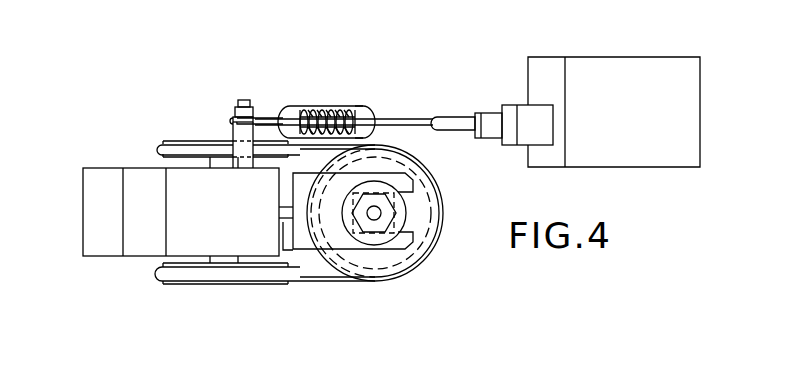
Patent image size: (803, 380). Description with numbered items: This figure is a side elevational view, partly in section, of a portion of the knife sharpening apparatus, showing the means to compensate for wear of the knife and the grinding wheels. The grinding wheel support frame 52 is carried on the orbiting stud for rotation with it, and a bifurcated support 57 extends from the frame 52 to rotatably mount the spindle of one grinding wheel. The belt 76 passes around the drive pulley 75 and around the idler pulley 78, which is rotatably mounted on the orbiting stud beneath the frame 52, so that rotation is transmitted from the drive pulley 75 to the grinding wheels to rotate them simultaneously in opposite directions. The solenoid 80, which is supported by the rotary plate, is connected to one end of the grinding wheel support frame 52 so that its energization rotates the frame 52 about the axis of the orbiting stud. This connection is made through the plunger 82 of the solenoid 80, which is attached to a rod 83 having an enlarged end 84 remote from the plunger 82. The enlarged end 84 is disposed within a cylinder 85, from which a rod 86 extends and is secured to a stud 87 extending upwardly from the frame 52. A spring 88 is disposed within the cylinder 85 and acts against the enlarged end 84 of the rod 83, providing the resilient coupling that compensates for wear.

The grinding wheel support frame 52 is at (82, 203).
The bifurcated support 57 is at (303, 231).
The drive pulley 75 is at (180, 140).
The belt 76 is at (298, 282).
The idler pulley 78 is at (177, 285).
The solenoid 80 is at (594, 120).
The plunger 82 is at (490, 113).
The rod 83 is at (410, 118).
The enlarged end 84 is at (298, 106).
The cylinder 85 is at (362, 106).
The rod 86 is at (268, 116).
The stud 87 is at (232, 138).
The spring 88 is at (318, 106).